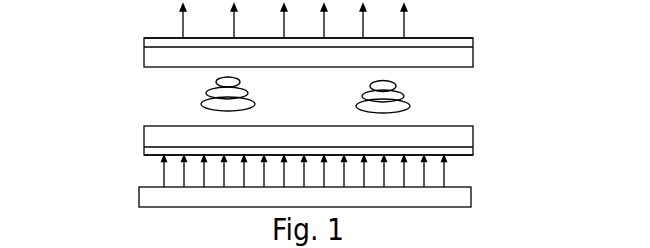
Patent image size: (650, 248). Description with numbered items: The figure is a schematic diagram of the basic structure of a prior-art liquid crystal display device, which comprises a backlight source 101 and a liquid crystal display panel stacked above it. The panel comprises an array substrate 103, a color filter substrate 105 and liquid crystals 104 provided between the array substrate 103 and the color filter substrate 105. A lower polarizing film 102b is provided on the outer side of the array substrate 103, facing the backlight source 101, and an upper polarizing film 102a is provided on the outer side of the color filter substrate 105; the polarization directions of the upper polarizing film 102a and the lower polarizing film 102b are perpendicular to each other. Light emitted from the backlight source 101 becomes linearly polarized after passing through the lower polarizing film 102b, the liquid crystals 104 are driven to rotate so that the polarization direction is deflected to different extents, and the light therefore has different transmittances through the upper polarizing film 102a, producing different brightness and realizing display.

The backlight source 101 is at (432, 194).
The upper polarizing film 102a is at (144, 38).
The lower polarizing film 102b is at (445, 152).
The array substrate 103 is at (398, 137).
The liquid crystals 104 is at (205, 97).
The color filter substrate 105 is at (453, 59).